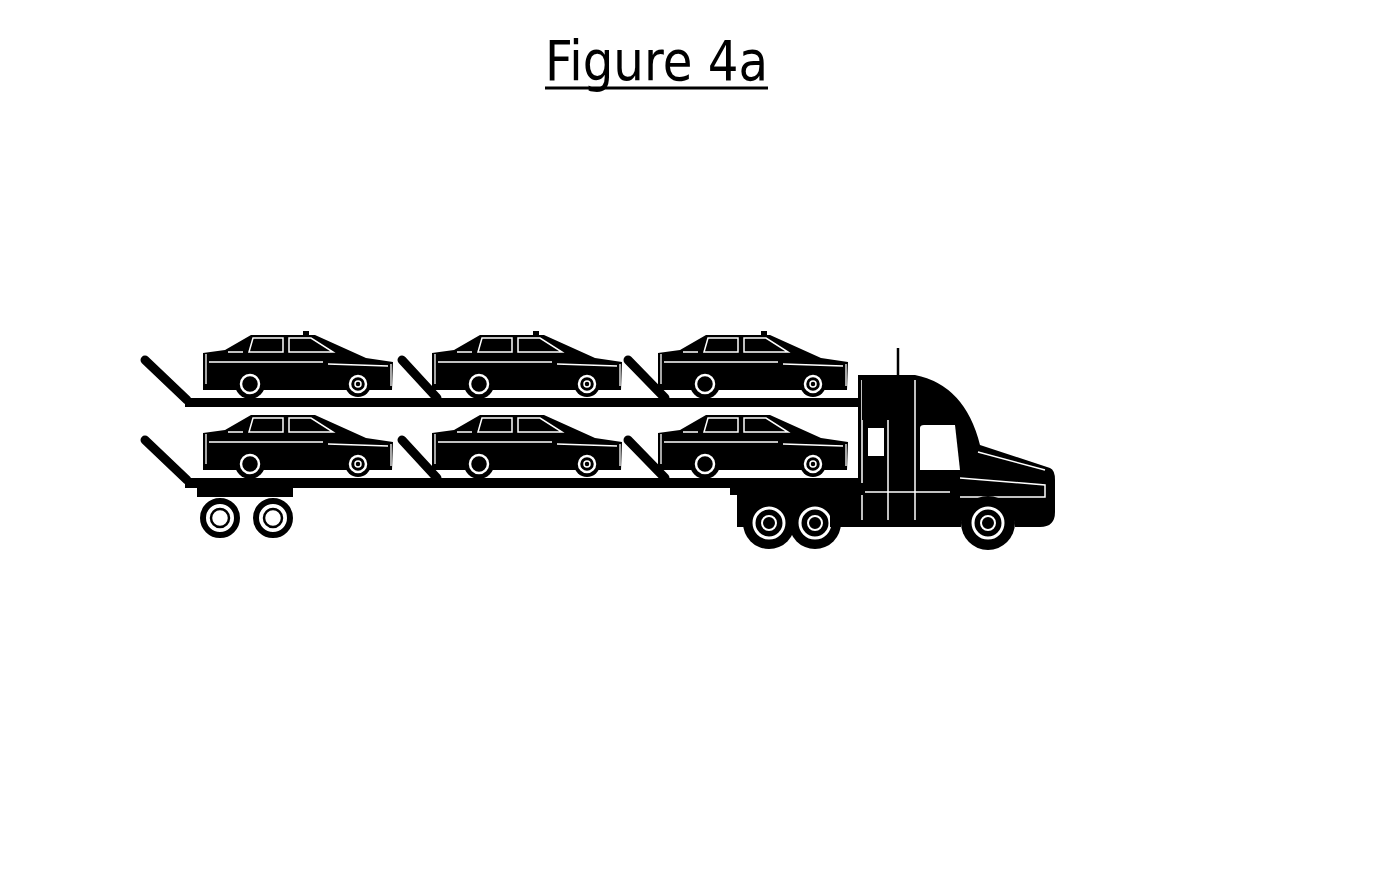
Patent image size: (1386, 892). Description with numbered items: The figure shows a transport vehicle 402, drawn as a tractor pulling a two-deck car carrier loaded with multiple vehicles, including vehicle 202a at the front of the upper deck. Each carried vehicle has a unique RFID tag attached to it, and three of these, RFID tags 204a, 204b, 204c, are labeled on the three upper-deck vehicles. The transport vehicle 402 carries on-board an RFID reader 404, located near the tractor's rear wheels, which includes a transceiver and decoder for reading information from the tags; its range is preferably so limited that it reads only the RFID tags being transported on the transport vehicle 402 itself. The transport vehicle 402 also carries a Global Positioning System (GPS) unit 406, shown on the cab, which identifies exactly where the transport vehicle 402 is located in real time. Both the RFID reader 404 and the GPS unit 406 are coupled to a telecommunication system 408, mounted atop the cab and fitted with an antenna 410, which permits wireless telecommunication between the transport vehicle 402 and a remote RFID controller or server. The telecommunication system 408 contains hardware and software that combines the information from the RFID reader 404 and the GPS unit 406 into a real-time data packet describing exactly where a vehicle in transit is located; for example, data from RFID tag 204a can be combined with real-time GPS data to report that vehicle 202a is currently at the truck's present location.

The vehicle 202a is at (207, 342).
The RFID tag 204a is at (305, 334).
The RFID tag 204b is at (536, 334).
The RFID tag 204c is at (764, 334).
The transport vehicle 402 is at (1110, 483).
The RFID reader 404 is at (838, 542).
The Global Positioning System (GPS) unit 406 is at (960, 533).
The telecommunication system 408 is at (1073, 360).
The antenna 410 is at (914, 364).